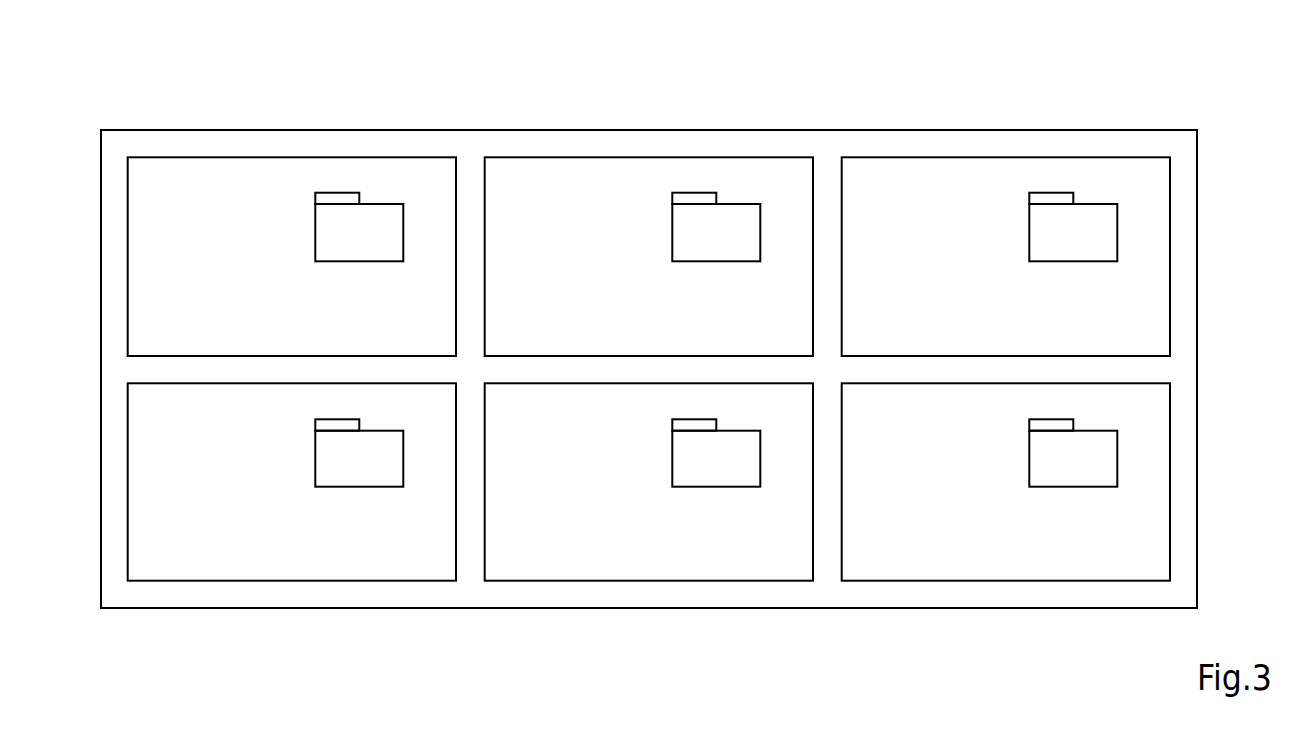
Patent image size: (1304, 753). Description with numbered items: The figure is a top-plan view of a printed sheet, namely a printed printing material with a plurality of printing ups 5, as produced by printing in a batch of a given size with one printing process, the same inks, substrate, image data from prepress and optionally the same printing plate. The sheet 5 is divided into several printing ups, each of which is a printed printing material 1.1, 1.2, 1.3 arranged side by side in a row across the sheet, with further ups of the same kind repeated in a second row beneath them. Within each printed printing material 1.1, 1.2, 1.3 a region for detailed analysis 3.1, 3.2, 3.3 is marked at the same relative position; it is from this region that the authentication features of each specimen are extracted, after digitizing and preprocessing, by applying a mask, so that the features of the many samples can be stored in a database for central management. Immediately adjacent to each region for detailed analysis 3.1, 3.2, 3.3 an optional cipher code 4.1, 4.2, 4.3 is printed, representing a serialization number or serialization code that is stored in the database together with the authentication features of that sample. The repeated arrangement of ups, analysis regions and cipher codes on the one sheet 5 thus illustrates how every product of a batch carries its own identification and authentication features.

The printed printing material 1.1 is at (237, 182).
The printed printing material 1.2 is at (649, 202).
The printed printing material 1.3 is at (1006, 202).
The region for detailed analysis 3.1 is at (392, 233).
The region for detailed analysis 3.2 is at (729, 155).
The region for detailed analysis 3.3 is at (1086, 155).
The optional cipher code 4.1 is at (340, 198).
The optional cipher code 4.2 is at (686, 111).
The optional cipher code 4.3 is at (1043, 111).
The printed printing material with a plurality of printing ups 5 is at (1180, 377).